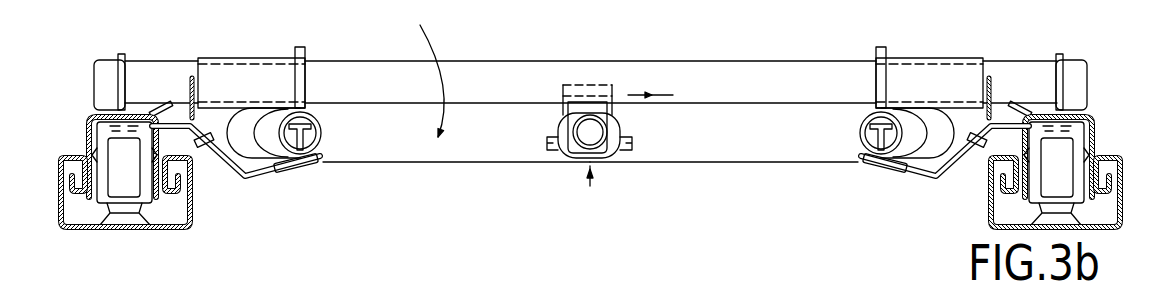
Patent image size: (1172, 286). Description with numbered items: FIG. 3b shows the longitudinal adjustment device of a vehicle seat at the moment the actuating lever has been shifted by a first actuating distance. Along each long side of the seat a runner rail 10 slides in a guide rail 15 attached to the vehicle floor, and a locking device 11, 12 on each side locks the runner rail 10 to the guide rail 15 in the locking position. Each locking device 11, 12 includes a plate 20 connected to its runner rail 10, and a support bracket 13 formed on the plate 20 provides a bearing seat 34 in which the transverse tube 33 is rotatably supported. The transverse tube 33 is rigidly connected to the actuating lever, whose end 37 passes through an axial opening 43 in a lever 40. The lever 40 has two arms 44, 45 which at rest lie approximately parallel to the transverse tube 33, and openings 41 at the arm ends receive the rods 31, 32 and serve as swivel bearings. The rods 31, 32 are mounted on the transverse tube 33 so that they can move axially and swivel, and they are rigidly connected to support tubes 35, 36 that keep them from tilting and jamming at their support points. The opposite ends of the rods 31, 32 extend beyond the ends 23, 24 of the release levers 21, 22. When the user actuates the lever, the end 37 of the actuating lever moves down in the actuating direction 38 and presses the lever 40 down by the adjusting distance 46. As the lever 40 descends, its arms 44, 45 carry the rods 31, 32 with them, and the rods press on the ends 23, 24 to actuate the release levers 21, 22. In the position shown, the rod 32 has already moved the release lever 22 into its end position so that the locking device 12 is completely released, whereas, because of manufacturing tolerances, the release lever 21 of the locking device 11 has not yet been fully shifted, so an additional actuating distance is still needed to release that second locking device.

The runner rail 10 is at (1085, 155).
The locking device 11 is at (1100, 113).
The locking device 12 is at (80, 100).
The support bracket 13 is at (97, 110).
The guide rail 15 is at (1124, 188).
The plate 20 is at (87, 122).
The release lever 21 is at (955, 171).
The release lever 22 is at (243, 180).
The end of release lever 23 is at (893, 171).
The end of release lever 24 is at (285, 176).
The rod 31 is at (861, 154).
The rod 32 is at (315, 166).
The transverse tube 33 is at (528, 77).
The bearing seat 34 is at (125, 62).
The support tube 35 is at (911, 75).
The support tube 36 is at (247, 58).
The end of actuating lever 37 is at (580, 152).
The actuating direction 38 is at (594, 166).
The lever 40 is at (424, 68).
The opening 41 is at (905, 138).
The axial opening 43 is at (550, 126).
The arm 44 is at (733, 164).
The arm 45 is at (400, 163).
The adjusting distance 46 is at (664, 95).